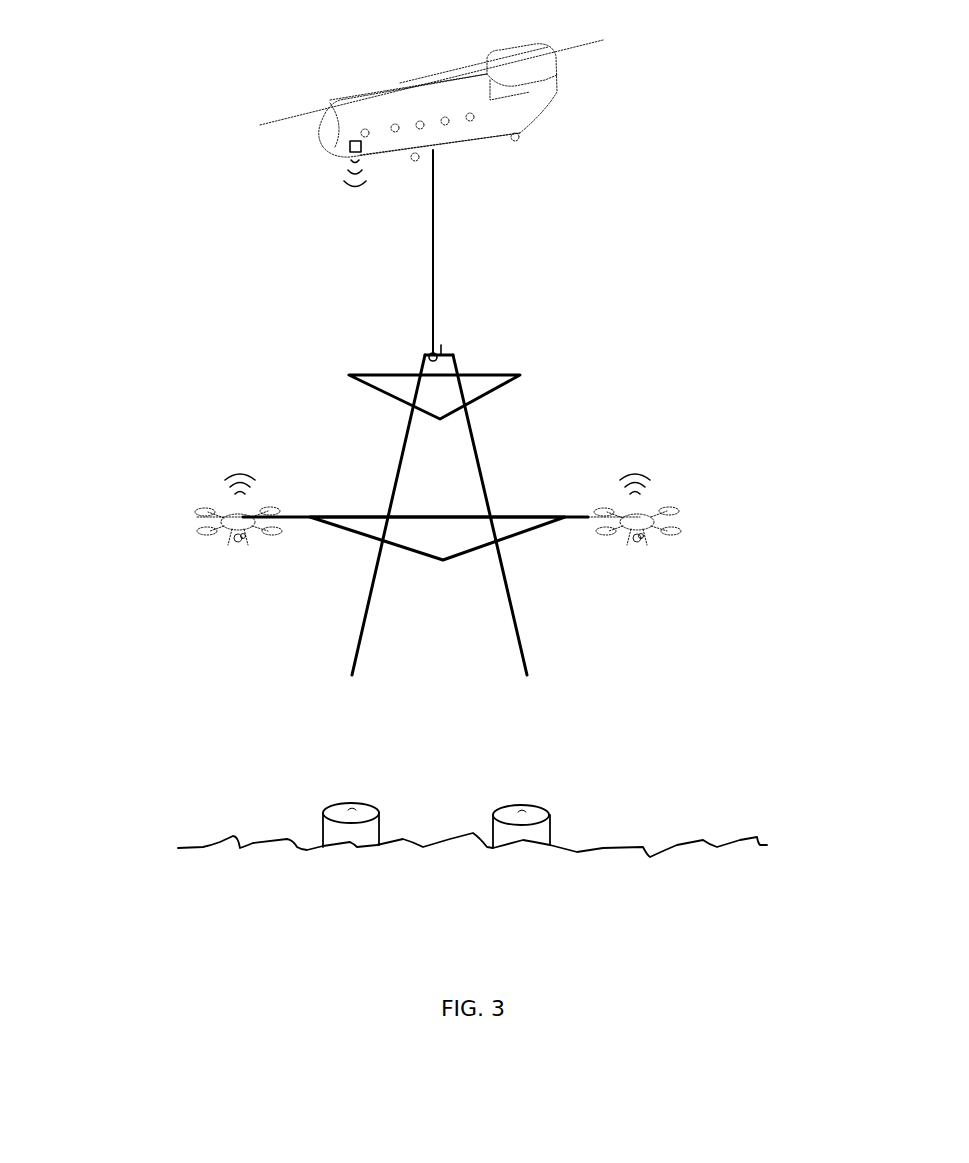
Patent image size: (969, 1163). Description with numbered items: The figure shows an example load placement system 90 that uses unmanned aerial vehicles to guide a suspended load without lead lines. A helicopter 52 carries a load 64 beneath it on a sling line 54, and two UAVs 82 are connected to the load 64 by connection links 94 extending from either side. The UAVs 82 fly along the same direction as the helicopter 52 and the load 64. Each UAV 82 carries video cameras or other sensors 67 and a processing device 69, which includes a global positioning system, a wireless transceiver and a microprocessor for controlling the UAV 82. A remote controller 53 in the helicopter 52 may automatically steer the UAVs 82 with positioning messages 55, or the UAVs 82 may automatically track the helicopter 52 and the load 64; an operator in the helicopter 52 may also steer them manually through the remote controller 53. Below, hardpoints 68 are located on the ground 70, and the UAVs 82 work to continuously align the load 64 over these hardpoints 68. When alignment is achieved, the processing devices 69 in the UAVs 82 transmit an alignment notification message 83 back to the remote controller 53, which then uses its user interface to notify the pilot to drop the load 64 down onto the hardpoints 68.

The helicopter 52 is at (542, 107).
The remote controller 53 is at (350, 153).
The sling line 54 is at (432, 312).
The wireless messages 55 is at (339, 195).
The load 64 is at (380, 393).
The sensors 67 is at (244, 538).
The hardpoints 68 is at (333, 805).
The processing device 69 is at (238, 539).
The ground 70 is at (737, 838).
The unmanned aerial vehicles 82 is at (218, 512).
The alignment notification message 83 is at (439, 463).
The load placement system 90 is at (218, 355).
The connection links 94 is at (292, 517).